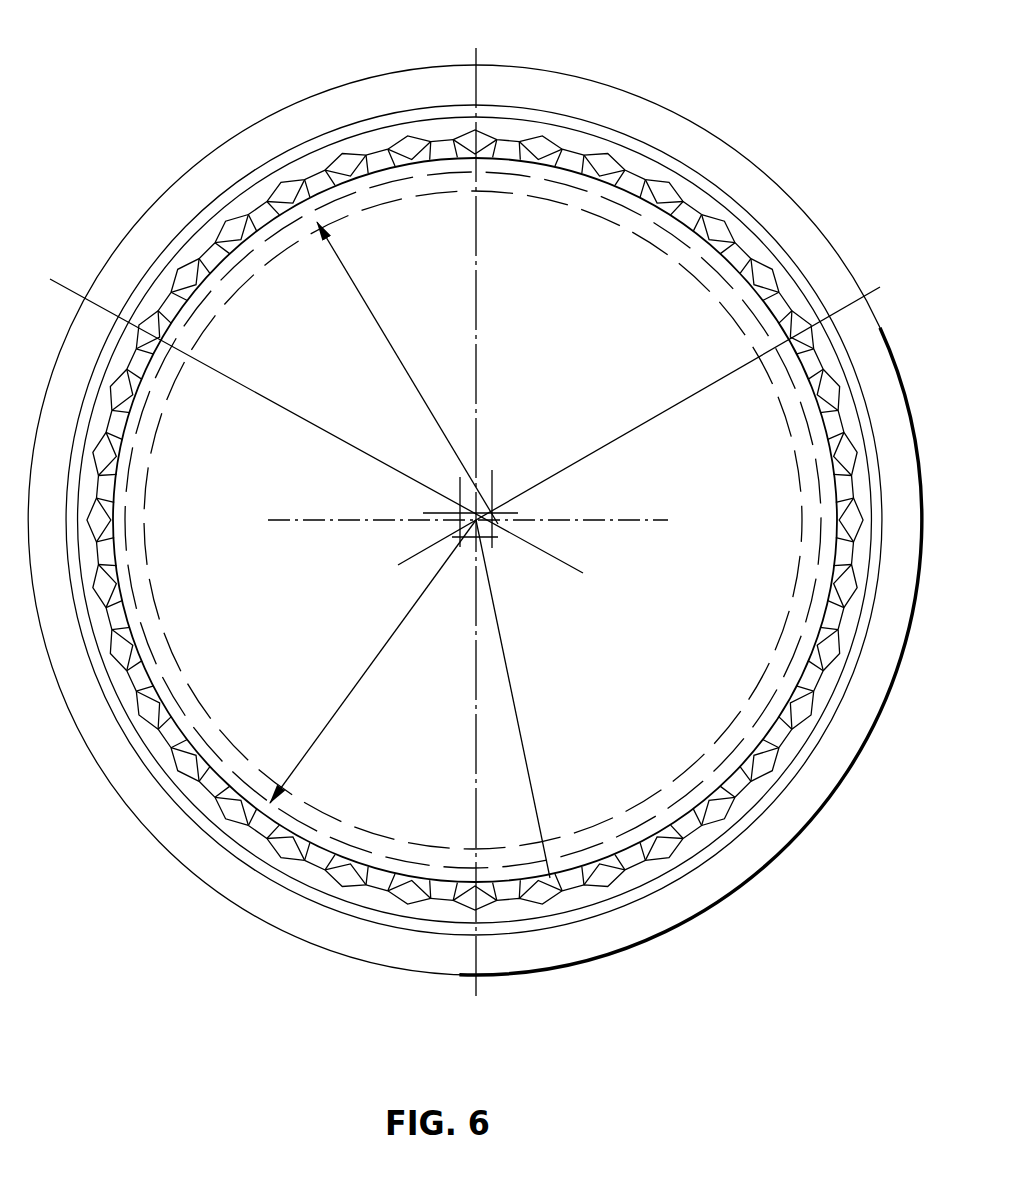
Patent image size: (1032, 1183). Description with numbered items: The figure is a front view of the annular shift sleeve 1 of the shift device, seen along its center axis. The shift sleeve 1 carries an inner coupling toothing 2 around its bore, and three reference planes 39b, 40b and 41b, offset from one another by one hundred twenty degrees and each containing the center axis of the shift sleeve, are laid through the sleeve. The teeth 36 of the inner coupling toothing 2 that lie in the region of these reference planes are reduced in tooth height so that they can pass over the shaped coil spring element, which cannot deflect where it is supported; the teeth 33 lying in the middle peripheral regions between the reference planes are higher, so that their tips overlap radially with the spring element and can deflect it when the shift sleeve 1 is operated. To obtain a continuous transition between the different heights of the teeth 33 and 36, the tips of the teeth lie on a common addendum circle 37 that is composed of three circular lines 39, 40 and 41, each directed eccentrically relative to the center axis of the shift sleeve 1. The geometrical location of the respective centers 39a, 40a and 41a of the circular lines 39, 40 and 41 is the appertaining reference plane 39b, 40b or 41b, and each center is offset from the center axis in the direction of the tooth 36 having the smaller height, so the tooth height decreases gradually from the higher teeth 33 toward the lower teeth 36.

The shift sleeve 1 is at (531, 67).
The inner coupling toothing 2 is at (652, 838).
The higher teeth 33 is at (485, 150).
The teeth of reduced height 36 is at (802, 340).
The common addendum circle 37 is at (768, 308).
The circular line 39 is at (263, 768).
The center of circular line 39a is at (460, 521).
The reference plane 39b is at (79, 286).
The circular line 40 is at (160, 590).
The center of circular line 40a is at (497, 498).
The reference plane 40b is at (880, 285).
The circular line 41 is at (795, 538).
The center of circular line 41a is at (474, 541).
The reference plane 41b is at (478, 336).